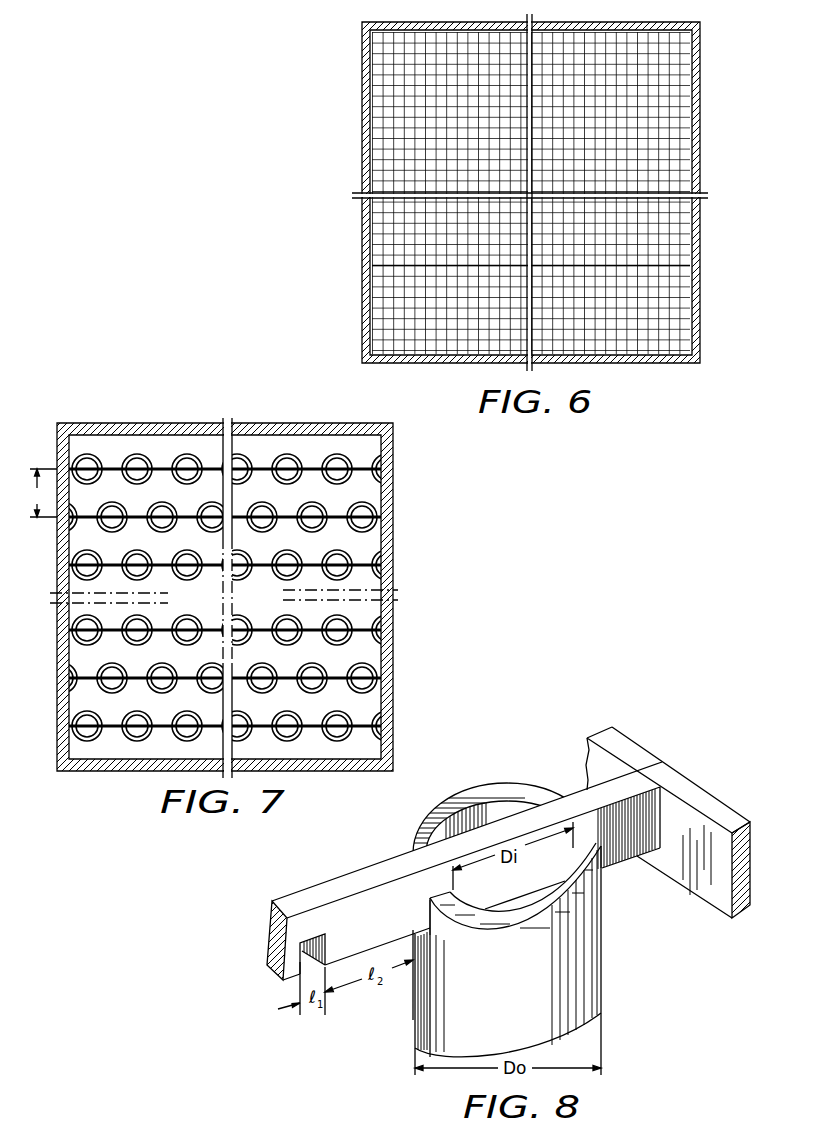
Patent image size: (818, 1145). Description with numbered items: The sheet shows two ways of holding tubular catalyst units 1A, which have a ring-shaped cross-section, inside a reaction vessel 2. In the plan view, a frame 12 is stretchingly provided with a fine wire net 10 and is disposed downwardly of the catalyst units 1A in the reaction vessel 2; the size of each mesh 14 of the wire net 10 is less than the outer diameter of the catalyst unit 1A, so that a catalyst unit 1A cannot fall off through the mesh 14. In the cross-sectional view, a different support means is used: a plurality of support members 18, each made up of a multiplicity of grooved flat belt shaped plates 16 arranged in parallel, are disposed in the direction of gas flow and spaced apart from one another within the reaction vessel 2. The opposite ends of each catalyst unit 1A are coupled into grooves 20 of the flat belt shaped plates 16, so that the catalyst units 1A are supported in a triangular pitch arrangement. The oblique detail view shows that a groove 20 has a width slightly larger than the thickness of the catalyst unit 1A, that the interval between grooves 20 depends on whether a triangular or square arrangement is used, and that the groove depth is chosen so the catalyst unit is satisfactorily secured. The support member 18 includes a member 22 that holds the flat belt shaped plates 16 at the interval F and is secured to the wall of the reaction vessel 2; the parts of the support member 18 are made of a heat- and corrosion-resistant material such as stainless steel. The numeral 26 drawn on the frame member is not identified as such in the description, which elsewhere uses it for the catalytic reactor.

In FIG. 6, the reaction vessel 2 is at (547, 192).
In FIG. 7, the reaction vessel 2 is at (232, 584).
In FIG. 6, the frame 12 is at (695, 117).
In FIG. 6, the wire net 10 is at (682, 229).
In FIG. 6, the mesh 14 is at (673, 270).
In FIG. 7, the tubular catalyst unit 1A is at (279, 453).
In FIG. 8, the tubular catalyst unit 1A is at (421, 832).
In FIG. 7, the grooved flat belt shaped plate 16 is at (312, 462).
In FIG. 8, the grooved flat belt shaped plate 16 is at (575, 802).
In FIG. 7, the support member 18 is at (246, 597).
In FIG. 8, the support member 18 is at (668, 822).
In FIG. 7, the member 22 is at (391, 527).
In FIG. 8, the member 22 is at (700, 805).
In FIG. 7, the frame bottom member 26 is at (392, 656).
In FIG. 8, the groove 20 is at (297, 968).